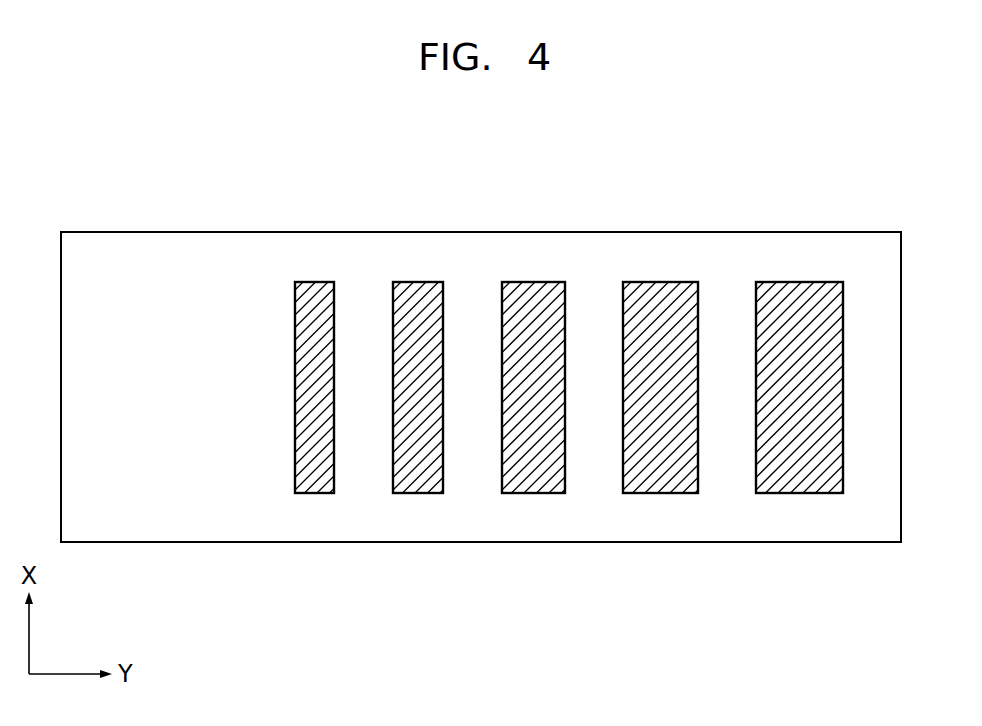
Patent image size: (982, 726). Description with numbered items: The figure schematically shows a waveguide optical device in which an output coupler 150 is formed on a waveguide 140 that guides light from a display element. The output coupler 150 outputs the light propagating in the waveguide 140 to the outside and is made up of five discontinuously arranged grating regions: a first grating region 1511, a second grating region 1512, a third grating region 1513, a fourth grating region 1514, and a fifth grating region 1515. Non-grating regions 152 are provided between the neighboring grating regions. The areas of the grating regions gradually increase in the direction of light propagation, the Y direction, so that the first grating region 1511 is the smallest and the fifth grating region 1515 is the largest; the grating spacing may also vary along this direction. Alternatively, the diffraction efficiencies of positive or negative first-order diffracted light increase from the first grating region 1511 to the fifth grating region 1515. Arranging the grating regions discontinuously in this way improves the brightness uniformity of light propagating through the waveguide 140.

The waveguide 140 is at (114, 252).
The output coupler 150 is at (586, 330).
The non-grating region 152 is at (364, 315).
The first grating region 1511 is at (315, 300).
The second grating region 1512 is at (418, 300).
The third grating region 1513 is at (540, 300).
The fourth grating region 1514 is at (668, 300).
The fifth grating region 1515 is at (805, 300).